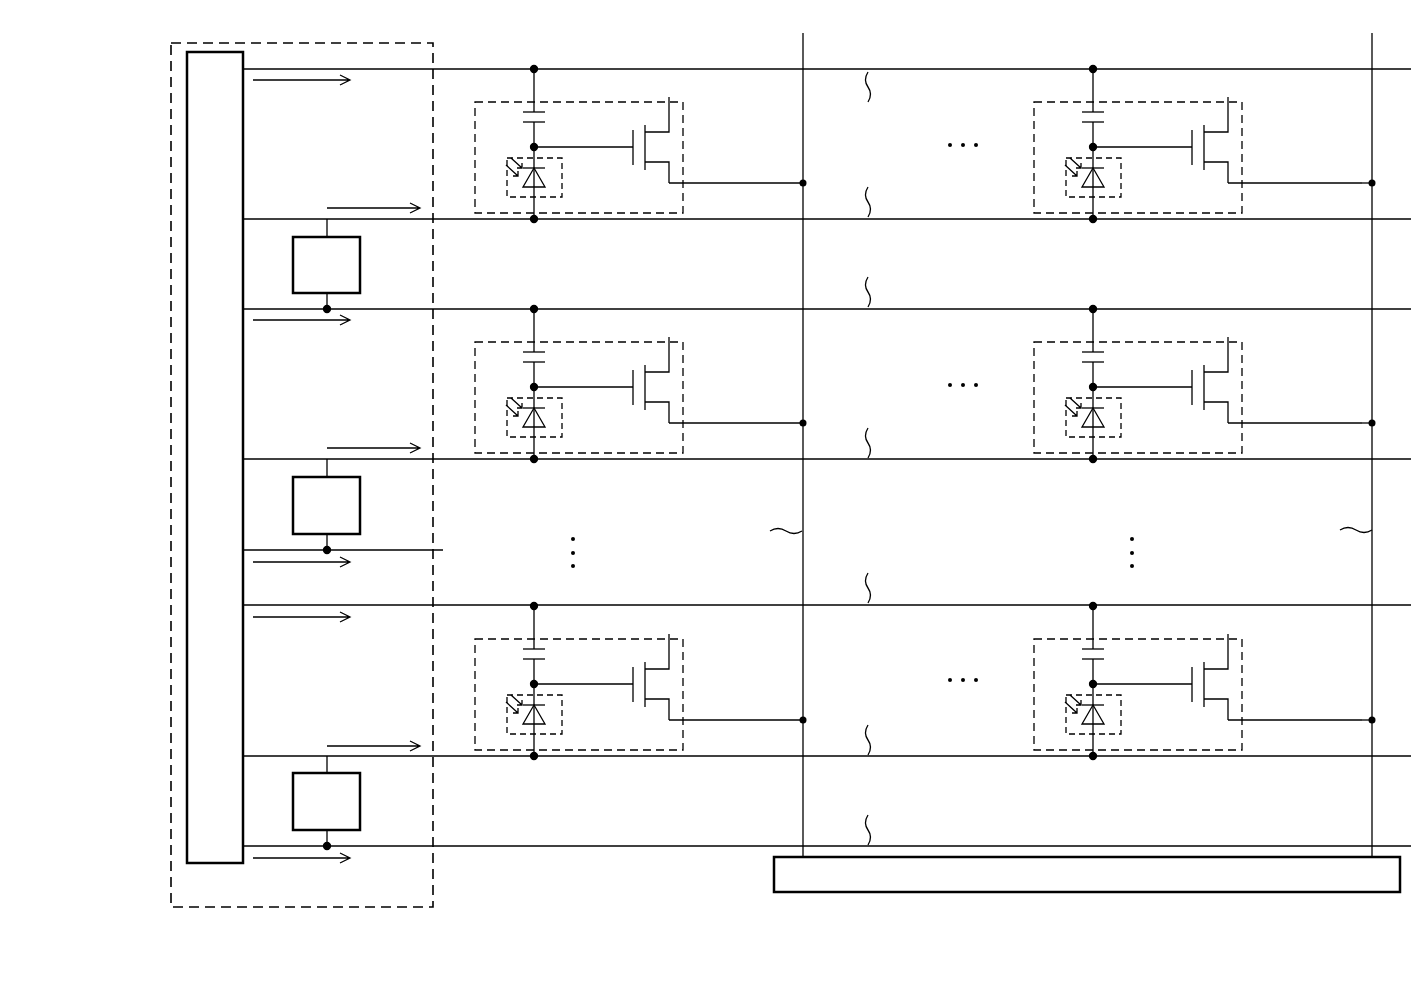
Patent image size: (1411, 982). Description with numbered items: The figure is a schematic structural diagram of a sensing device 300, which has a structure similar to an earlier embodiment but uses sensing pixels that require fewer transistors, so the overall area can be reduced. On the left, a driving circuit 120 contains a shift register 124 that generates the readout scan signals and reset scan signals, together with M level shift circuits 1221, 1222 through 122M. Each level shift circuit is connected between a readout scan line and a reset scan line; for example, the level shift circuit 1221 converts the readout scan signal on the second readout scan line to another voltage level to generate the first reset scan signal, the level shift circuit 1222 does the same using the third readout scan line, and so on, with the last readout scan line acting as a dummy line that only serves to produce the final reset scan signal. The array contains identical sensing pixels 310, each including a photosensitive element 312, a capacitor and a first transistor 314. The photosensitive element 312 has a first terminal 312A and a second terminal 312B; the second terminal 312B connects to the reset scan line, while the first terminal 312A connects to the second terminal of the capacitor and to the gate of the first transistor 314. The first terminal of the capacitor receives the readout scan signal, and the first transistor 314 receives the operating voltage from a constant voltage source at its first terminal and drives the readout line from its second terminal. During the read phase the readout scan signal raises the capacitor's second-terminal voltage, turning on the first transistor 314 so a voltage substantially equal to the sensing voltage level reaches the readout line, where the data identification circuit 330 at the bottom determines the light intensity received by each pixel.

The sensing device 300 is at (130, 80).
The driving circuit 120 is at (265, 475).
The shift register 124 is at (234, 469).
The level shift circuit 1221 is at (352, 275).
The level shift circuit 1222 is at (352, 515).
The level shift circuit 122M is at (354, 811).
The sensing pixel 310 is at (683, 157).
The photosensitive element 312 is at (562, 183).
The first terminal 312A is at (545, 168).
The second terminal 312B is at (533, 189).
The first transistor 314 is at (633, 157).
The data identification circuit 330 is at (1050, 874).